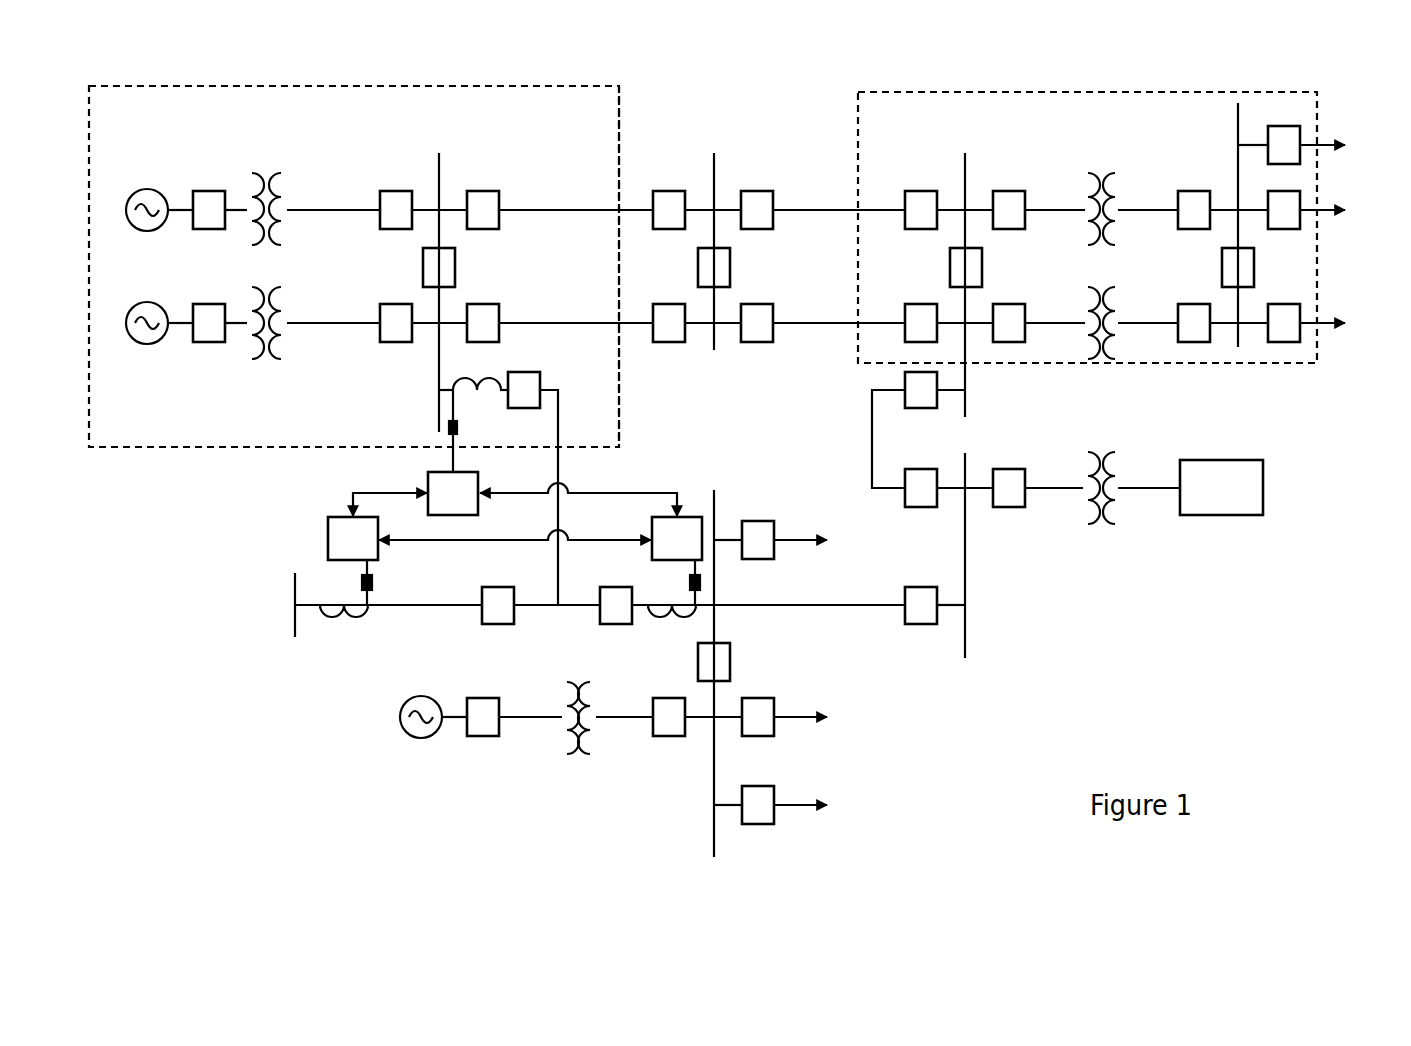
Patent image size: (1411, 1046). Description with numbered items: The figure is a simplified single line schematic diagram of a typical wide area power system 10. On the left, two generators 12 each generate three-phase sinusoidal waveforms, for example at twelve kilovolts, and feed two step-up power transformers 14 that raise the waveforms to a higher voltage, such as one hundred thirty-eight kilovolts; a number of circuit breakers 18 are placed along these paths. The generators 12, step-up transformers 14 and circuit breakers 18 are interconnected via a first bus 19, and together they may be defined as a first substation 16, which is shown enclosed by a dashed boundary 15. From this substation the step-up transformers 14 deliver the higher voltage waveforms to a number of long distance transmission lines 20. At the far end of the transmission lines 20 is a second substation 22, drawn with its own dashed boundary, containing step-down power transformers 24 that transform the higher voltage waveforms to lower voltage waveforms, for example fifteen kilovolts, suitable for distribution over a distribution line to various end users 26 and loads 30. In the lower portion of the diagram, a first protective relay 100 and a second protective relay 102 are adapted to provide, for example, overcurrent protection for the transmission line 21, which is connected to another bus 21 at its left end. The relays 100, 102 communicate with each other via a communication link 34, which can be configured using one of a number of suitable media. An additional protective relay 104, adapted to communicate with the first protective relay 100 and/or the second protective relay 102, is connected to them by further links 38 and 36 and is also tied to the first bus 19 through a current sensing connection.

The wide area power system 10 is at (757, 105).
The generator 12 is at (146, 232).
The step-up power transformer 14 is at (262, 168).
The first substation 15 is at (330, 86).
The first substation 16 is at (619, 153).
The circuit breaker 18 is at (483, 230).
The first bus 19 is at (439, 165).
The long distance transmission line 20 is at (634, 210).
The transmission line 21 is at (309, 607).
The second substation 22 is at (1145, 92).
The step-down power transformer 24 is at (1102, 172).
The end user 26 is at (1330, 152).
The load 30 is at (1263, 488).
The communication link 34 is at (418, 543).
The communication link 36 is at (632, 493).
The communication link 38 is at (375, 492).
The first protective relay 100 is at (349, 567).
The second protective relay 102 is at (675, 567).
The protective relay 104 is at (493, 491).